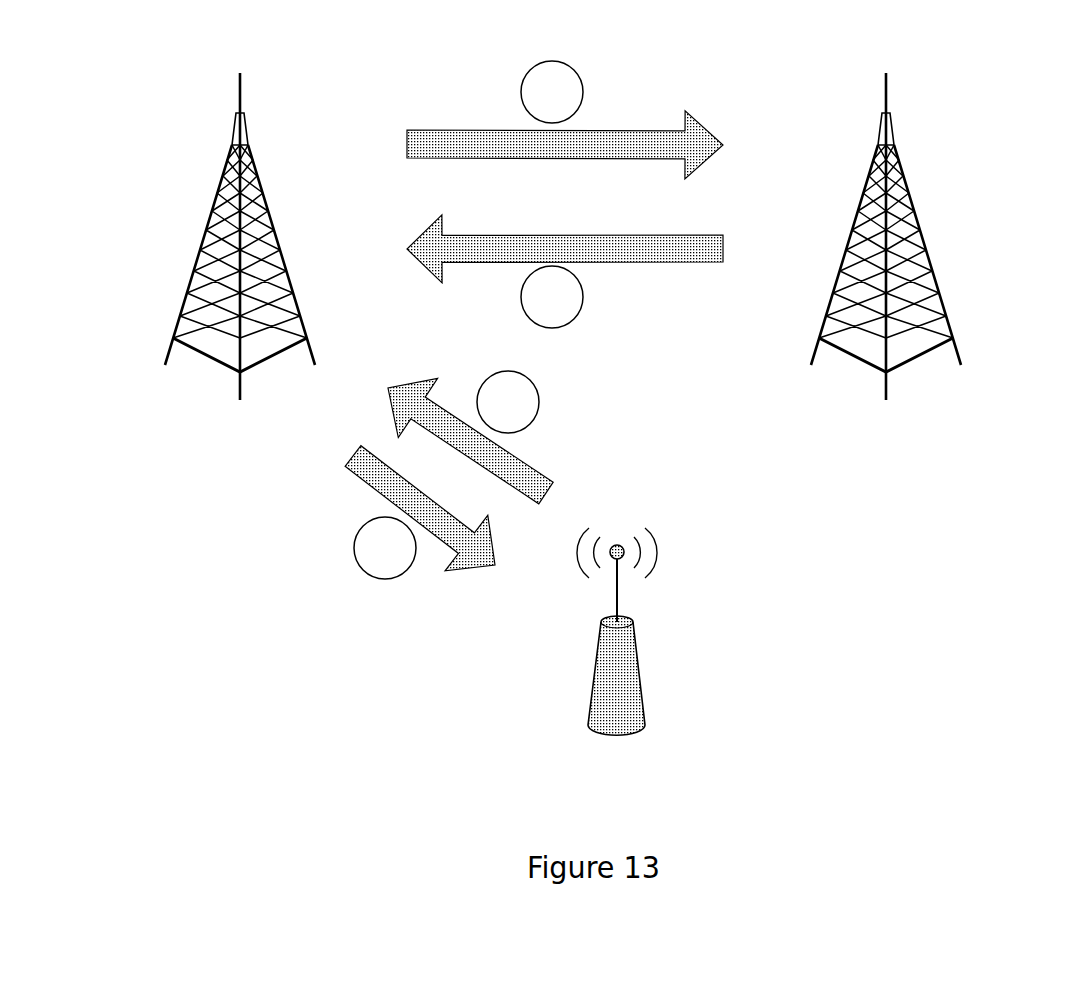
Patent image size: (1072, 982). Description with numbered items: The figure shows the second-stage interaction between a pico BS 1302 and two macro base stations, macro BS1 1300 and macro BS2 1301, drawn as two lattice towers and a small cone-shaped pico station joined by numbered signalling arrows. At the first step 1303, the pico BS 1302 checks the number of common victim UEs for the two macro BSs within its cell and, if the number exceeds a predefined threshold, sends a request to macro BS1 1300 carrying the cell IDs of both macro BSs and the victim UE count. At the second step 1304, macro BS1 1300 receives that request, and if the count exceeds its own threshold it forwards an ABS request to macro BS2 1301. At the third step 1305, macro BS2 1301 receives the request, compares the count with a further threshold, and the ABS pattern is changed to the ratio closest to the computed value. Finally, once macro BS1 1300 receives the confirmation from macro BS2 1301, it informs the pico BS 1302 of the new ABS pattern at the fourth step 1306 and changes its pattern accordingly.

The macro BS1 1300 is at (198, 273).
The macro BS2 1301 is at (930, 273).
The pico BS 1302 is at (650, 675).
The step of checking the number of common victim UEs 1303 is at (522, 458).
The step of macro BS1 receiving the request 1304 is at (590, 126).
The step of macro BS2 receiving the request 1305 is at (690, 233).
The step of informing the pico BS about the new ABS pattern 1306 is at (372, 488).